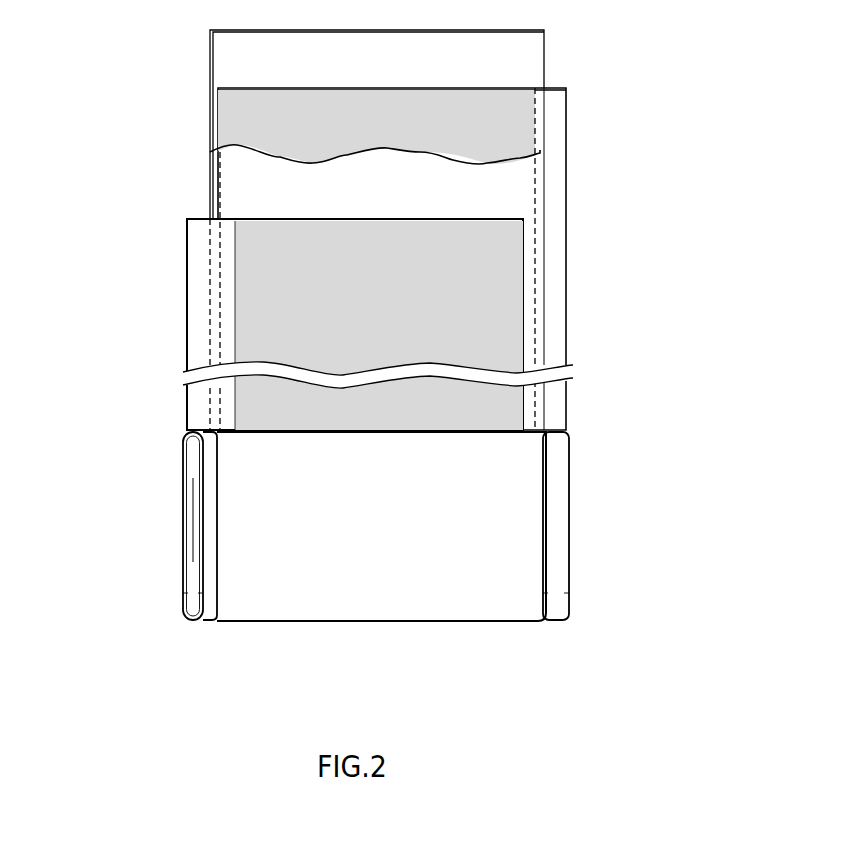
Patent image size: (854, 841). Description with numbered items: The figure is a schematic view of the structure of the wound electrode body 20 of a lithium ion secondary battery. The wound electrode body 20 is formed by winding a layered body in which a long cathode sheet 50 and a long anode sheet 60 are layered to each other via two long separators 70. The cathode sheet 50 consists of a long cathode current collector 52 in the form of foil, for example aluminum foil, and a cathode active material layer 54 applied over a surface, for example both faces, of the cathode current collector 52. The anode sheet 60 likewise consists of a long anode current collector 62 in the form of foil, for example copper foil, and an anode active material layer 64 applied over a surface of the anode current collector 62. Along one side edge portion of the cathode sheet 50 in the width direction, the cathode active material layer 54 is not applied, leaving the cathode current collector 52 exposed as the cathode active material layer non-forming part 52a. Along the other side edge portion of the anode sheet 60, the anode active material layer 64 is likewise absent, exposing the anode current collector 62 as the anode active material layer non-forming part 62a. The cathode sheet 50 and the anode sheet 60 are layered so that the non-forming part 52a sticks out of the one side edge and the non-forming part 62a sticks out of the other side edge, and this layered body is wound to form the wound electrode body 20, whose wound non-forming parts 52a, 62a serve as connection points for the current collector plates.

The wound electrode body 20 is at (440, 602).
The cathode sheet 50 is at (290, 419).
The cathode current collector 52 is at (187, 357).
The cathode active material layer non-forming part 52a is at (207, 517).
The cathode active material layer 54 is at (248, 235).
The anode sheet 60 is at (448, 350).
The anode current collector 62 is at (567, 265).
The anode active material layer non-forming part 62a is at (553, 235).
The anode active material layer 64 is at (528, 113).
The separator 70 is at (232, 50).